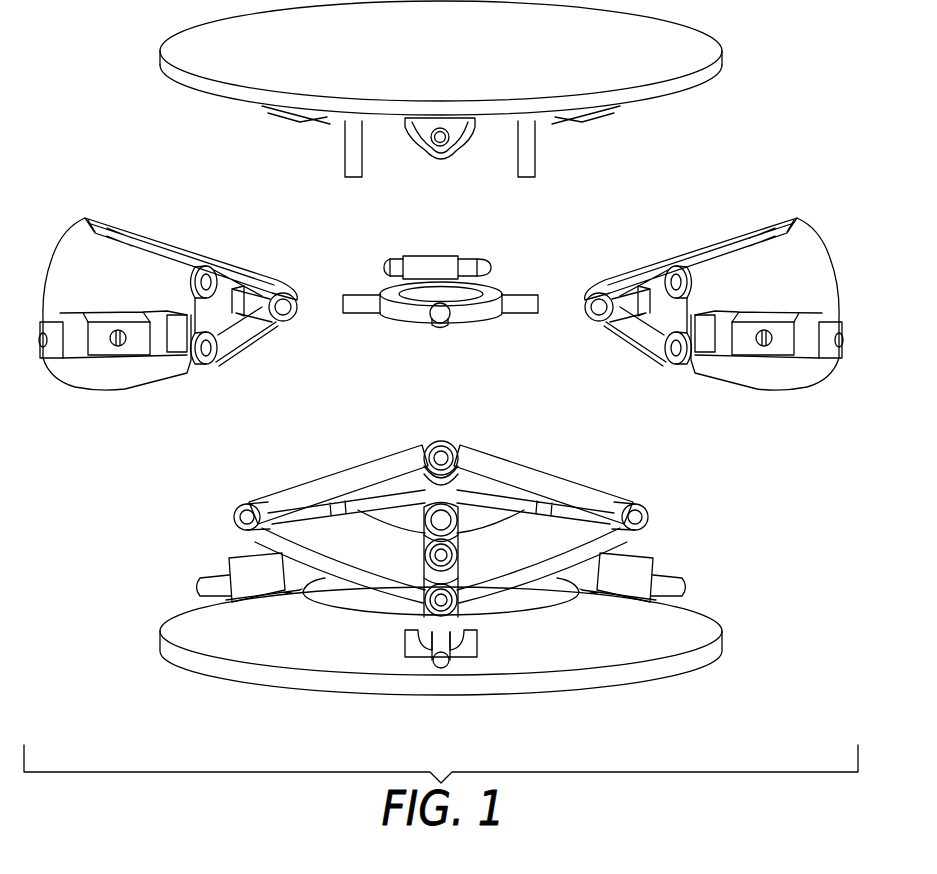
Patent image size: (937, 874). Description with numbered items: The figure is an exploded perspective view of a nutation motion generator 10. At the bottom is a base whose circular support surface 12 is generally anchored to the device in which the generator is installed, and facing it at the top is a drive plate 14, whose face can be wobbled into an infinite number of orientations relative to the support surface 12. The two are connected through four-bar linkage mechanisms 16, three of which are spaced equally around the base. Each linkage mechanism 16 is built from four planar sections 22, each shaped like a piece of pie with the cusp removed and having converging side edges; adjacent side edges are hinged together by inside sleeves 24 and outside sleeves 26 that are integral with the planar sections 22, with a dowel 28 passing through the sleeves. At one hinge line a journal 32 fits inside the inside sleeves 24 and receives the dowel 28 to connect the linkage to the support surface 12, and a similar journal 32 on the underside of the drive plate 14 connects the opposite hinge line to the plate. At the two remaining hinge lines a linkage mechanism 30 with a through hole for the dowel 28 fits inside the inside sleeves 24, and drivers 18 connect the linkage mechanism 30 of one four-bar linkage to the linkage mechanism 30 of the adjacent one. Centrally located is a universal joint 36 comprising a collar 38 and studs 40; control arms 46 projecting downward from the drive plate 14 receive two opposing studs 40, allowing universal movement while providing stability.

The nutation motion generator 10 is at (108, 706).
The support surface 12 is at (567, 647).
The drive plate 14 is at (525, 60).
The four-bar linkage mechanism 16 is at (126, 402).
The driver 18 is at (253, 308).
The planar section 22 is at (208, 257).
The inside sleeve 24 is at (190, 247).
The outside sleeve 26 is at (82, 230).
The dowel 28 is at (646, 516).
The linkage mechanism 30 is at (135, 347).
The journal 32 is at (240, 566).
The universal joint 36 is at (500, 334).
The collar 38 is at (490, 310).
The stud 40 is at (368, 301).
The control arm 46 is at (360, 151).